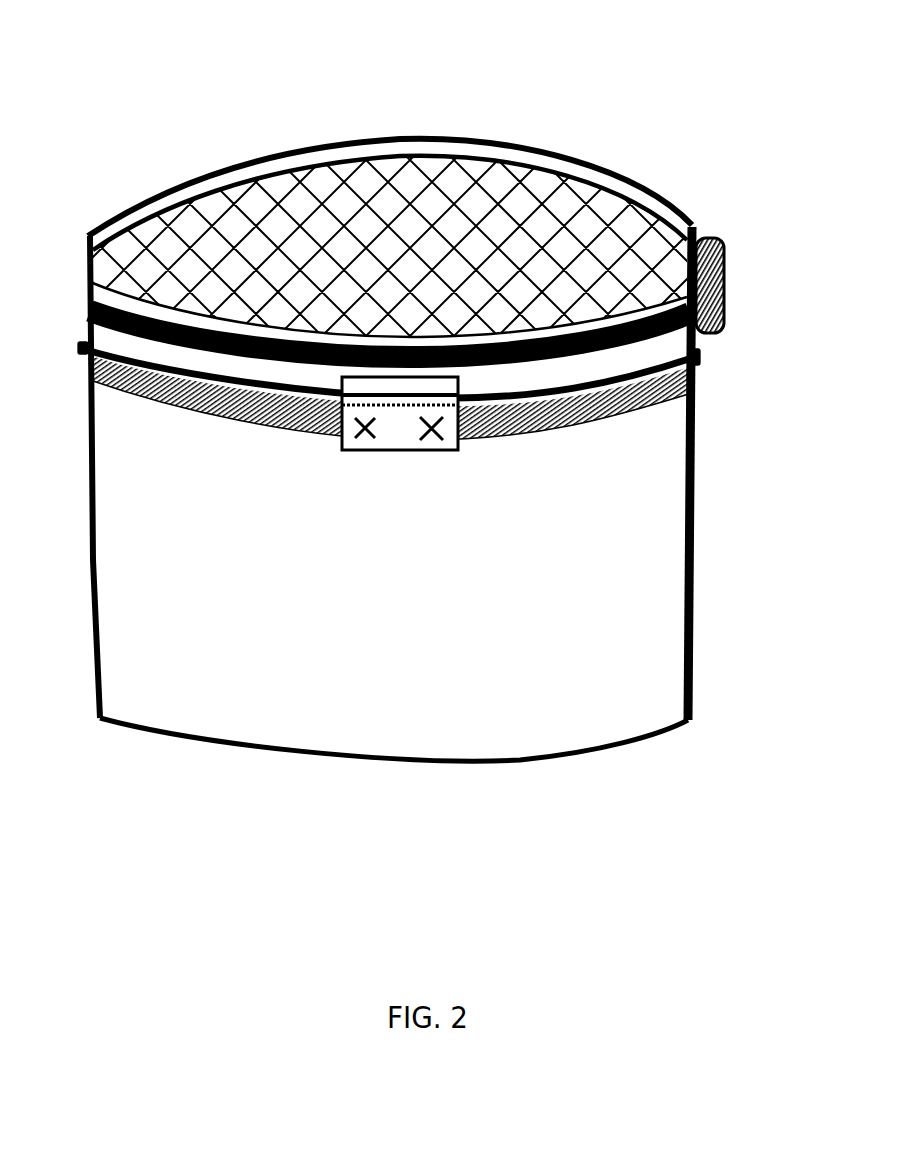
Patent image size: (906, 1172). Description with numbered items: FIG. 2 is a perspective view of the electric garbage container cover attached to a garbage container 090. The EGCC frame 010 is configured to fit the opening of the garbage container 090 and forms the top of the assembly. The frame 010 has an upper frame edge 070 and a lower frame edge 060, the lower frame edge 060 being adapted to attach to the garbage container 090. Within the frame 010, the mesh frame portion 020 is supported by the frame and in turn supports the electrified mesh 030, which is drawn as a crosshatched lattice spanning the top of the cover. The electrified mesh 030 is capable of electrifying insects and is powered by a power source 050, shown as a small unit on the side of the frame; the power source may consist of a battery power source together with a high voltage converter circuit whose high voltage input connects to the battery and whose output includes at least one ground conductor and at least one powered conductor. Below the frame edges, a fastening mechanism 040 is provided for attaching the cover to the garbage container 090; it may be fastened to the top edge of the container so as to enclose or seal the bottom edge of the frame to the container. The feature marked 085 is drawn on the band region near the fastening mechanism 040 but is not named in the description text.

The EGCC frame 010 is at (253, 200).
The mesh frame portion 020 is at (160, 213).
The electrified mesh 030 is at (413, 213).
The fastening mechanism 040 is at (398, 428).
The power source 050 is at (710, 232).
The lower frame edge 060 is at (688, 410).
The upper frame edge 070 is at (112, 222).
The hatched strip 085 is at (517, 437).
The garbage container 090 is at (253, 680).